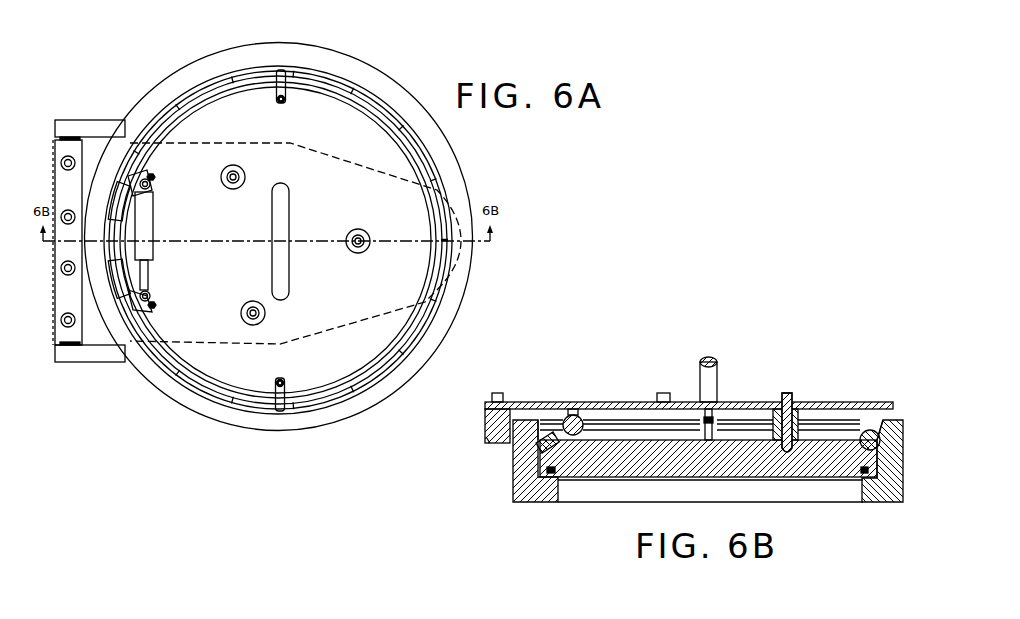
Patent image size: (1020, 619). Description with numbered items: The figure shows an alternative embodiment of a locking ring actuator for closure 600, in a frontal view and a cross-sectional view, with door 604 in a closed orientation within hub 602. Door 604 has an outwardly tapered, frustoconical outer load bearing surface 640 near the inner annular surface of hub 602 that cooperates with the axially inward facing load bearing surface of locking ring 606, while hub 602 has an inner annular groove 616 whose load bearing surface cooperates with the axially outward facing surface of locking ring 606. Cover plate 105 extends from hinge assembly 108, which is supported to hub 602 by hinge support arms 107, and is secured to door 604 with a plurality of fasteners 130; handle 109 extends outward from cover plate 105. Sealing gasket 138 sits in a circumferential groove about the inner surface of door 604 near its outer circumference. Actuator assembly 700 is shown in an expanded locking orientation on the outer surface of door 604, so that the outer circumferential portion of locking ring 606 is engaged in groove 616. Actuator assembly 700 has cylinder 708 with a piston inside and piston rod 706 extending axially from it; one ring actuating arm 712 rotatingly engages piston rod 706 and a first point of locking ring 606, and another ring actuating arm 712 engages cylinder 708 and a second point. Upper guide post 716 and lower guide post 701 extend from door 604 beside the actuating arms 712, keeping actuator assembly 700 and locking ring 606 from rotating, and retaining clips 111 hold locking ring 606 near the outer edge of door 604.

In FIG. 6A, the cover plate 105 is at (93, 330).
In FIG. 6A, the hinge support arms 107 is at (78, 122).
In FIG. 6B, the hinge support arms 107 is at (486, 440).
In FIG. 6A, the hinge assembly 108 is at (53, 130).
In FIG. 6B, the hinge assembly 108 is at (480, 411).
In FIG. 6A, the handle 109 is at (290, 288).
In FIG. 6B, the handle 109 is at (703, 359).
In FIG. 6A, the retaining clips 111 is at (284, 70).
In FIG. 6B, the fasteners 130 is at (786, 397).
In FIG. 6B, the sealing gasket 138 is at (865, 475).
In FIG. 6A, the closure 600 is at (352, 135).
In FIG. 6A, the hub 602 is at (455, 160).
In FIG. 6B, the hub 602 is at (513, 499).
In FIG. 6A, the door 604 is at (385, 324).
In FIG. 6B, the door 604 is at (600, 479).
In FIG. 6A, the locking ring 606 is at (248, 75).
In FIG. 6B, the inner annular groove 616 is at (888, 428).
In FIG. 6A, the frustoconical outer load bearing surface 640 is at (121, 252).
In FIG. 6B, the frustoconical outer load bearing surface 640 is at (868, 432).
In FIG. 6A, the actuator assembly 700 is at (190, 198).
In FIG. 6A, the lower guide post 701 is at (156, 305).
In FIG. 6A, the piston rod 706 is at (150, 270).
In FIG. 6A, the cylinder 708 is at (153, 222).
In FIG. 6B, the cylinder 708 is at (577, 415).
In FIG. 6A, the ring actuating arm 712 is at (128, 195).
In FIG. 6B, the ring actuating arm 712 is at (546, 443).
In FIG. 6A, the upper guide post 716 is at (154, 176).